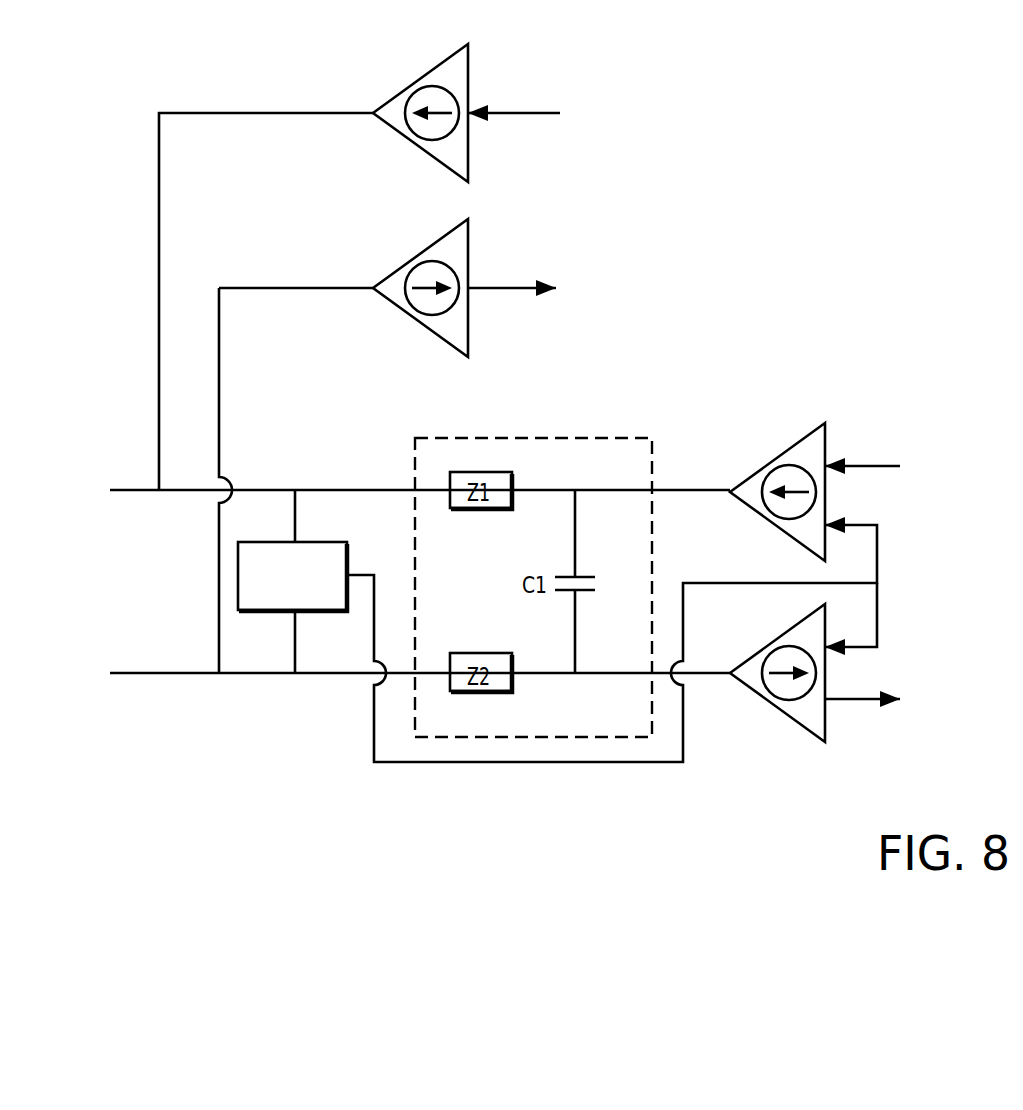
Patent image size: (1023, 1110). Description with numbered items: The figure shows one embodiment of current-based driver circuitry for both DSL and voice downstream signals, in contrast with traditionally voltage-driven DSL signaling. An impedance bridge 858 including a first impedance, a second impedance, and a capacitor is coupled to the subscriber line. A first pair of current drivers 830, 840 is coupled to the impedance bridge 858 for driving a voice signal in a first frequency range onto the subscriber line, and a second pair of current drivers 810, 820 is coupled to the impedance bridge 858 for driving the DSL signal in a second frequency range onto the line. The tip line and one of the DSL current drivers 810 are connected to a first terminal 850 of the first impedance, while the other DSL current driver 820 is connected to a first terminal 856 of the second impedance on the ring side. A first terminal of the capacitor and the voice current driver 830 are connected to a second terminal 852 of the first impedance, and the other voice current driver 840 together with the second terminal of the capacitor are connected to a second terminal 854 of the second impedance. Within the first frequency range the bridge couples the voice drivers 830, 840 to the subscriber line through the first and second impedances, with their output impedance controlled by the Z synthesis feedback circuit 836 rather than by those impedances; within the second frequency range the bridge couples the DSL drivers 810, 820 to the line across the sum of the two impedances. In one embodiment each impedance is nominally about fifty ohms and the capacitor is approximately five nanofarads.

The current driver 810 is at (422, 78).
The current driver 820 is at (422, 253).
The current driver 830 is at (780, 453).
The current driver 840 is at (783, 715).
The Z synthesis feedback circuit 836 is at (292, 581).
The first terminal of Z1 850 is at (155, 482).
The first terminal of Z2 856 is at (212, 667).
The second terminal of Z1 852 is at (583, 498).
The second terminal of Z2 854 is at (582, 667).
The impedance bridge 858 is at (593, 432).